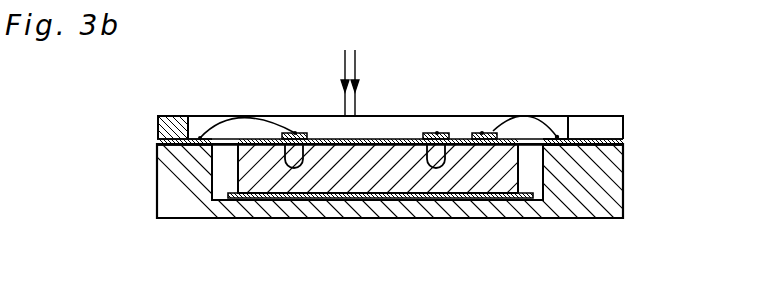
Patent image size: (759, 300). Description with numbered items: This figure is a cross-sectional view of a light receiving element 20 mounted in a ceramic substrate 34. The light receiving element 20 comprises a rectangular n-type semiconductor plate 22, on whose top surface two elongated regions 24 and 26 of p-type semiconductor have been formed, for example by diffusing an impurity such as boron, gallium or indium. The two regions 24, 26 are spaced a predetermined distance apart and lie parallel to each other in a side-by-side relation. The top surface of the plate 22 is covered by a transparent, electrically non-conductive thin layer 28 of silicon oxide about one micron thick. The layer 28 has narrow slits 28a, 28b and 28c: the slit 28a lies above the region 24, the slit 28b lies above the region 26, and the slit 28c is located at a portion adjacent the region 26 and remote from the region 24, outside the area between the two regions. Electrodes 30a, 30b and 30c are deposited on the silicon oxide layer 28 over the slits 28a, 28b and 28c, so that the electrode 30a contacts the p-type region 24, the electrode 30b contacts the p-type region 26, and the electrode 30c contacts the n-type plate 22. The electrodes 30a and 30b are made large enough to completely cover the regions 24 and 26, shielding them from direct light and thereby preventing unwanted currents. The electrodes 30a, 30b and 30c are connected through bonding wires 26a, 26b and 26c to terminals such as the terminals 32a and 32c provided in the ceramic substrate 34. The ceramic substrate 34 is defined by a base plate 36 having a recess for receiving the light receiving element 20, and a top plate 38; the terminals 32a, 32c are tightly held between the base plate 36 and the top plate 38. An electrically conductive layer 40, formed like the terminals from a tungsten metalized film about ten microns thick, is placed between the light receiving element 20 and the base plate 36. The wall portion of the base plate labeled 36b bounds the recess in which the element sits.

The light receiving element 20 is at (450, 93).
The n-type semiconductor plate 22 is at (372, 168).
The elongated region of p-type semiconductor 24 is at (292, 168).
The elongated region of p-type semiconductor 26 is at (435, 167).
The bonding wire 26a is at (210, 118).
The bonding wire 26b is at (437, 133).
The bonding wire 26c is at (560, 117).
The transparent thin layer of silicon oxide 28 is at (370, 118).
The slit 28a is at (305, 118).
The slit 28b is at (484, 131).
The slit 28c is at (548, 118).
The electrode 30a is at (268, 118).
The electrode 30b is at (423, 132).
The electrode 30c is at (496, 131).
The terminal 32a is at (157, 142).
The terminal 32c is at (625, 140).
The ceramic substrate 34 is at (625, 192).
The base plate 36 is at (592, 193).
The support wall 36b is at (545, 175).
The top plate 38 is at (605, 127).
The electrically conductive layer 40 is at (300, 198).